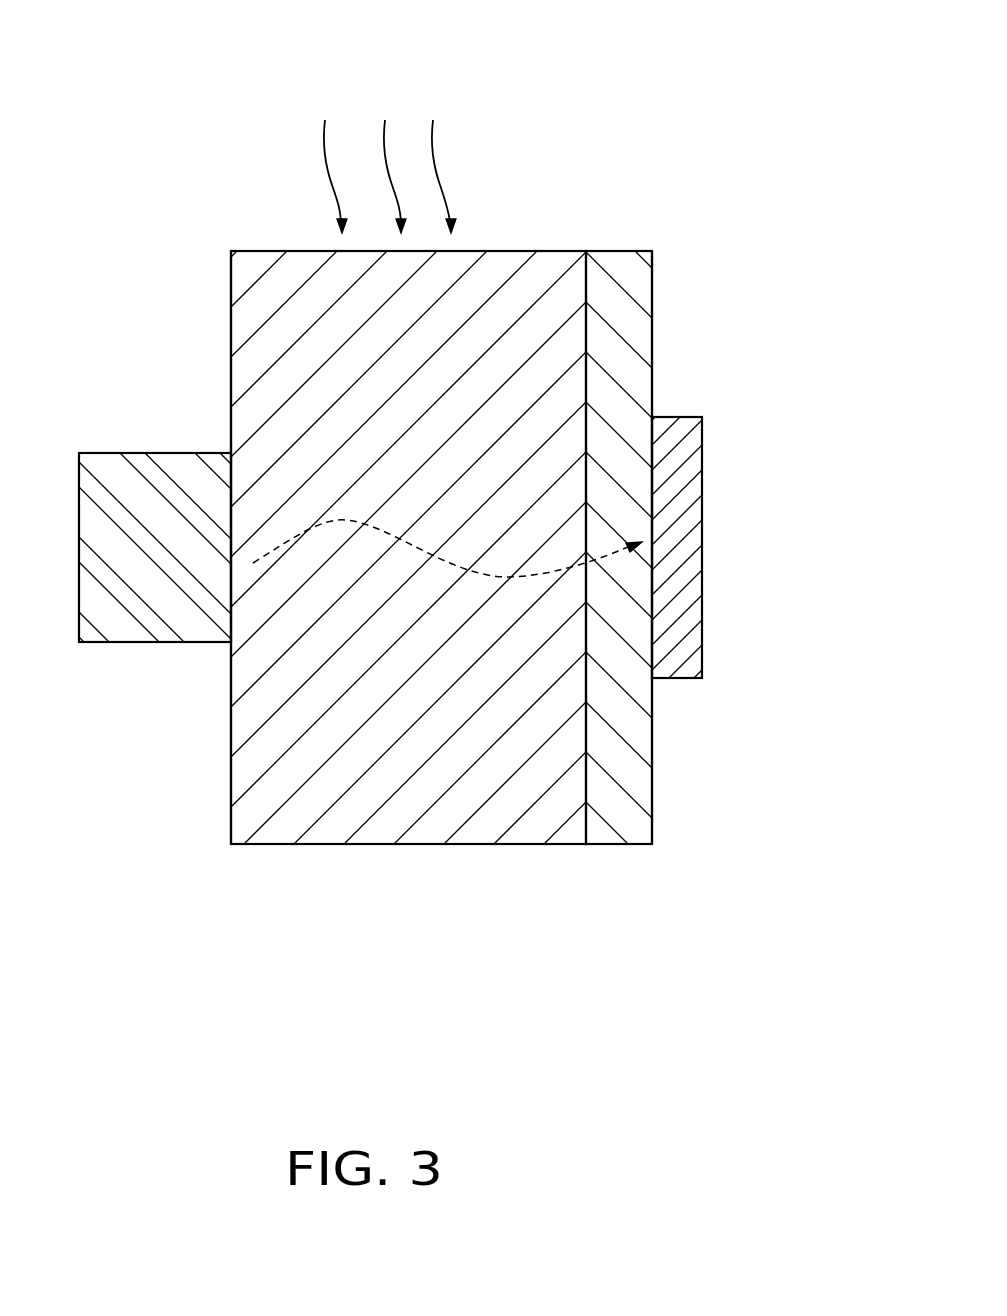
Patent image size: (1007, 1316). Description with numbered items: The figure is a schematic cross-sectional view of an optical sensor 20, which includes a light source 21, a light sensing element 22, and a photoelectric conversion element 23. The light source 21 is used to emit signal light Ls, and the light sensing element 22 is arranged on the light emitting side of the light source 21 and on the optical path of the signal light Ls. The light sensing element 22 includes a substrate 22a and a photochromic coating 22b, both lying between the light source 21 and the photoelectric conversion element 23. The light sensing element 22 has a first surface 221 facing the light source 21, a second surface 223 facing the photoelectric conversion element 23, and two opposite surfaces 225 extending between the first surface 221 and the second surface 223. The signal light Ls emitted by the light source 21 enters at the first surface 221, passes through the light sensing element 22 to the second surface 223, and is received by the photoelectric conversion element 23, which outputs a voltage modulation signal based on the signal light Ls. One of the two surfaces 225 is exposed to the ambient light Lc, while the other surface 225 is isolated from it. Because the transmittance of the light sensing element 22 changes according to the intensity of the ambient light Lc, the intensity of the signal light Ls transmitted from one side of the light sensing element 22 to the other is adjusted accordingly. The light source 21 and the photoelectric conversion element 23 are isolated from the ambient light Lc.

The optical sensor 20 is at (395, 36).
The light source 21 is at (121, 624).
The light sensing element 22 is at (655, 177).
The substrate 22a is at (497, 278).
The photochromic coating 22b is at (622, 280).
The first surface 221 is at (231, 328).
The second surface 223 is at (653, 353).
The two opposite surfaces 225 is at (263, 251).
The photoelectric conversion element 23 is at (688, 458).
The ambient light Lc is at (433, 128).
The signal light Ls is at (338, 522).